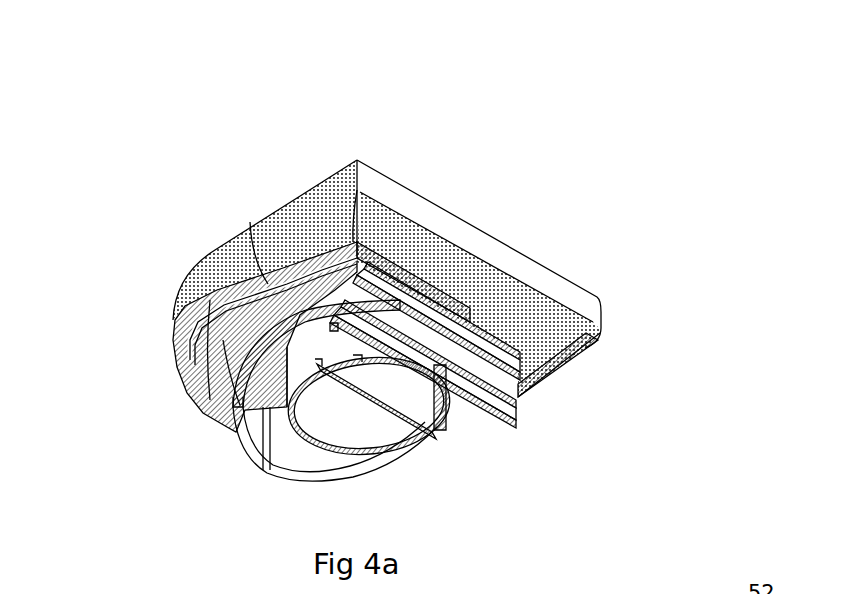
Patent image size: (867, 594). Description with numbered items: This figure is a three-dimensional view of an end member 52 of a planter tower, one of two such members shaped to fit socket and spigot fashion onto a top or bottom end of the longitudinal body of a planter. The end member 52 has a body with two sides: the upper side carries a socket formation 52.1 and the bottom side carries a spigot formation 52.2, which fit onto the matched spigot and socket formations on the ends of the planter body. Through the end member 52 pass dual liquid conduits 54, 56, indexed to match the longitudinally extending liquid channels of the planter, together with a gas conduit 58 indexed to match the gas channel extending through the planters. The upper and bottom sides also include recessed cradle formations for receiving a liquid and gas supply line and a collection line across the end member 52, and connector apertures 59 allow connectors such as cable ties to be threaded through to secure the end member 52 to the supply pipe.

The end member 52 is at (523, 130).
The socket formation 52.1 is at (295, 178).
The spigot formation 52.2 is at (241, 470).
The liquid conduit 54 is at (372, 424).
The liquid conduit 56 is at (416, 400).
The gas conduit 58 is at (338, 328).
The connector aperture 59 is at (458, 303).